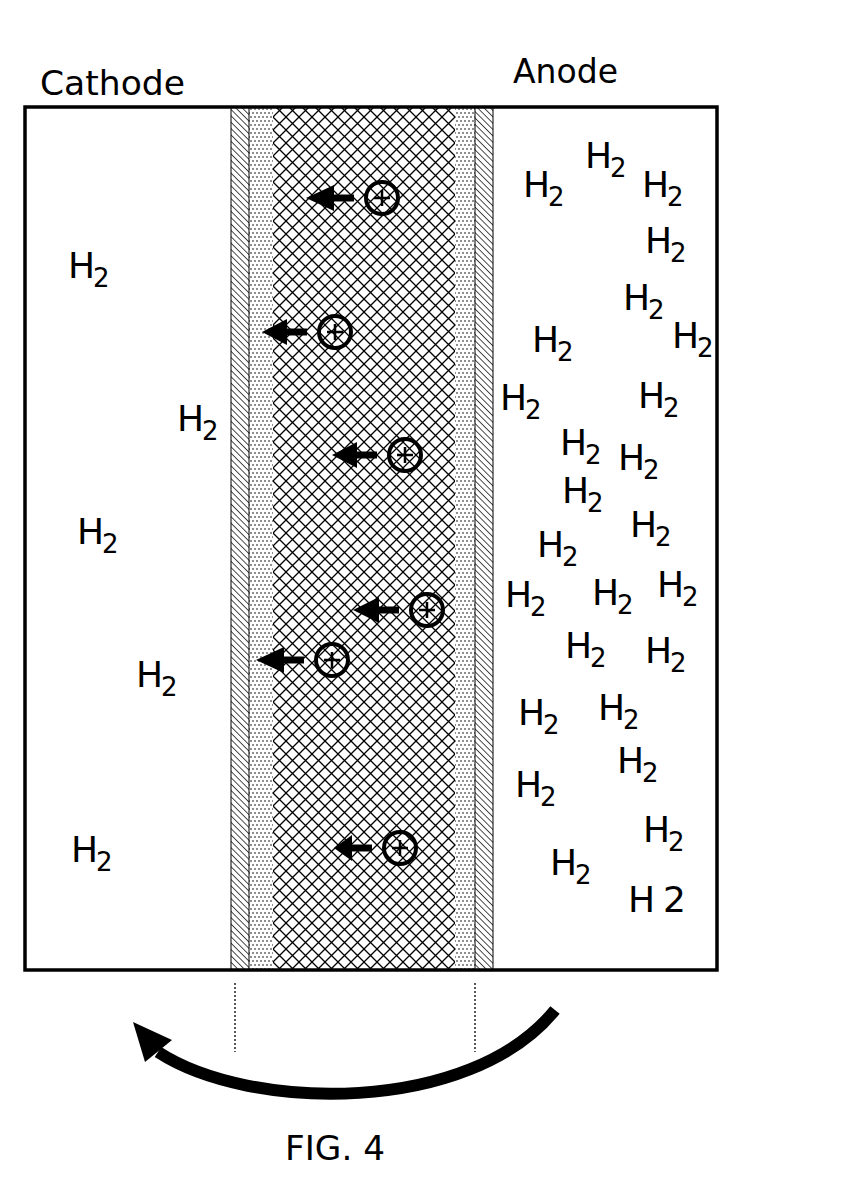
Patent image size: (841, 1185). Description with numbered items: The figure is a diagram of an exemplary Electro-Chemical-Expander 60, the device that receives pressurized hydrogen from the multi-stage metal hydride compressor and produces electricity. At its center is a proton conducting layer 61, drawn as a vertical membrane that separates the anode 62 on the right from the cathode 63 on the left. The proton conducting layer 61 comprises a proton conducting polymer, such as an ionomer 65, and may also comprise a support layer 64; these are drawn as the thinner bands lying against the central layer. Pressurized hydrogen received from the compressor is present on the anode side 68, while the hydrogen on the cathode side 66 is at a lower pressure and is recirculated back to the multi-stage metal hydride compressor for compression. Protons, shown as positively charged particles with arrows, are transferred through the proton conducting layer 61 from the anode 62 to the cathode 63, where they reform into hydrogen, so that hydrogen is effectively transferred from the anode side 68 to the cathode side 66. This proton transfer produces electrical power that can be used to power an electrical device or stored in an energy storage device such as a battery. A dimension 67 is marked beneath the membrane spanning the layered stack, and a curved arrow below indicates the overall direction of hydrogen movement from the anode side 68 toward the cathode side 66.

The Electro-Chemical-Expander 60 is at (347, 485).
The proton conducting layer 61 is at (323, 107).
The anode 62 is at (477, 107).
The cathode 63 is at (231, 107).
The support layer 64 is at (392, 107).
The ionomer 65 is at (258, 107).
The cathode side 66 is at (240, 241).
The membrane thickness 67 is at (473, 1040).
The anode side 68 is at (484, 257).